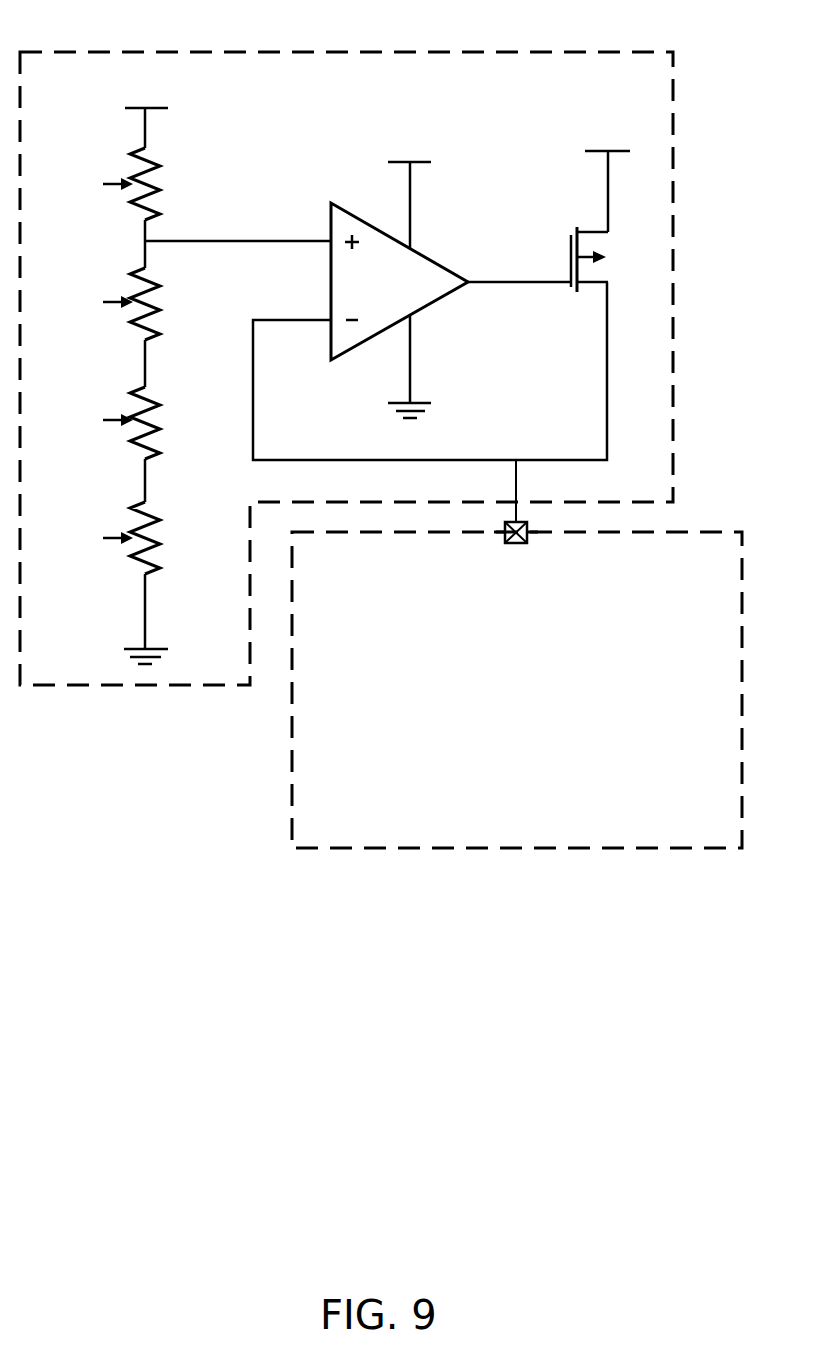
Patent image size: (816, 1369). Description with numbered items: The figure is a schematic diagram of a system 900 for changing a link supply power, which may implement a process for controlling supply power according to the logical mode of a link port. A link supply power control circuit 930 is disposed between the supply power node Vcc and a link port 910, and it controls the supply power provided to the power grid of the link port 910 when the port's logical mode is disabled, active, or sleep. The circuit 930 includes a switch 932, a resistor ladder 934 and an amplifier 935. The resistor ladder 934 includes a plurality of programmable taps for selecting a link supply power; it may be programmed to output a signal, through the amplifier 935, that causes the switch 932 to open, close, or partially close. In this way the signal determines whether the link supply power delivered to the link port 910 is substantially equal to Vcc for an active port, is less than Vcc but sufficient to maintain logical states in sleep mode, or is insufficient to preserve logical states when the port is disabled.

The system 900 is at (157, 786).
The link port 910 is at (693, 532).
The link supply power control circuit 930 is at (372, 52).
The switch 932 is at (590, 230).
The resistor ladder 934 is at (109, 135).
The amplifier 935 is at (436, 251).